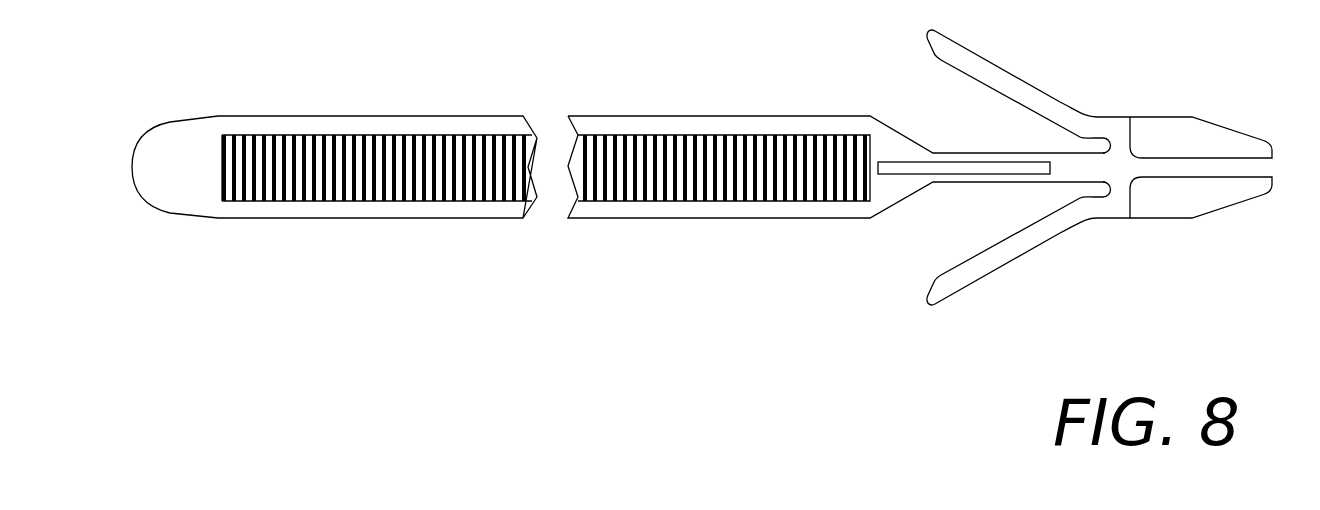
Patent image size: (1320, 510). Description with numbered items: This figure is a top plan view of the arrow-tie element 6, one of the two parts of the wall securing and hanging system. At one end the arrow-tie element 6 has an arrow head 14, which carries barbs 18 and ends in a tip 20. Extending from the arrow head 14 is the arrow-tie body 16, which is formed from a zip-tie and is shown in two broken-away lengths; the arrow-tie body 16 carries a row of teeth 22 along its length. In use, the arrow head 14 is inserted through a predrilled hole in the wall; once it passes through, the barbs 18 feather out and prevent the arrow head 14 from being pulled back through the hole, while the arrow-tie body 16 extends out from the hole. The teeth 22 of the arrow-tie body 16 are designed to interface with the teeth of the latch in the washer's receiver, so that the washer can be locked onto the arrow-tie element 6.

The arrow-tie element 6 is at (836, 209).
The arrow head 14 is at (1075, 193).
The arrow-tie body 16 is at (377, 97).
The barbs 18 is at (1032, 230).
The tip 20 is at (1253, 165).
The teeth 22 is at (653, 143).